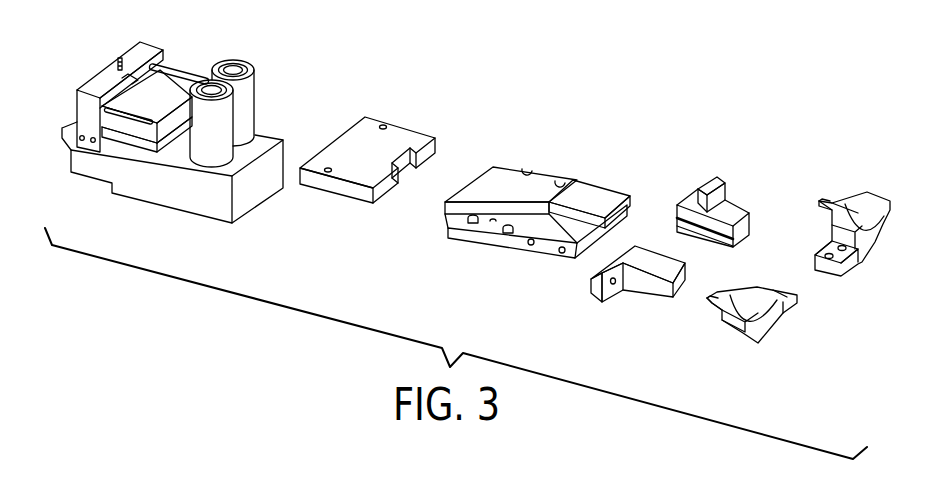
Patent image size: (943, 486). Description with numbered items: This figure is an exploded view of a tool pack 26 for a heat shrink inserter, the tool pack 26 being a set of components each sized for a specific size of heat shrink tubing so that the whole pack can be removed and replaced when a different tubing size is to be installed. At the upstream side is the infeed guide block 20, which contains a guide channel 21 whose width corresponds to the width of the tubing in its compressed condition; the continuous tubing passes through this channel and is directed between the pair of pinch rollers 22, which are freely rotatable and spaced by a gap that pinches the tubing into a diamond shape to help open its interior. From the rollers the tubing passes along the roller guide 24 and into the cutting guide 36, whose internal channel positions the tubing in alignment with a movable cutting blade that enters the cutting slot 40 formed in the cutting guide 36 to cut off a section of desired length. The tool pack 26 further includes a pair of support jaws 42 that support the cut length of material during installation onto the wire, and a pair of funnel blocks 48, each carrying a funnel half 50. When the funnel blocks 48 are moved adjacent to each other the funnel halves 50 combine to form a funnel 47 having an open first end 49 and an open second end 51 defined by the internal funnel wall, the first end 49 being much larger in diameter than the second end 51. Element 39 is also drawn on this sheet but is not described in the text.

The infeed guide block 20 is at (163, 88).
The guide channel 21 is at (185, 113).
The pinch rollers 22 is at (243, 108).
The roller guide 24 is at (362, 135).
The tool pack 26 is at (541, 182).
The cutting guide 36 is at (538, 192).
The block 39 is at (607, 227).
The cutting slot 40 is at (517, 220).
The support jaws 42 is at (700, 188).
The funnel 47 is at (791, 244).
The funnel blocks 48 is at (784, 302).
The open first end 49 is at (877, 221).
The funnel half 50 is at (709, 299).
The open second end 51 is at (818, 200).